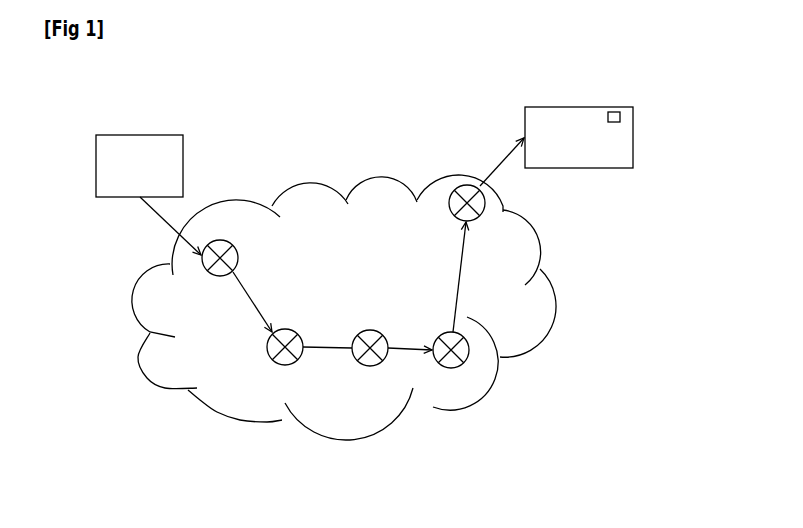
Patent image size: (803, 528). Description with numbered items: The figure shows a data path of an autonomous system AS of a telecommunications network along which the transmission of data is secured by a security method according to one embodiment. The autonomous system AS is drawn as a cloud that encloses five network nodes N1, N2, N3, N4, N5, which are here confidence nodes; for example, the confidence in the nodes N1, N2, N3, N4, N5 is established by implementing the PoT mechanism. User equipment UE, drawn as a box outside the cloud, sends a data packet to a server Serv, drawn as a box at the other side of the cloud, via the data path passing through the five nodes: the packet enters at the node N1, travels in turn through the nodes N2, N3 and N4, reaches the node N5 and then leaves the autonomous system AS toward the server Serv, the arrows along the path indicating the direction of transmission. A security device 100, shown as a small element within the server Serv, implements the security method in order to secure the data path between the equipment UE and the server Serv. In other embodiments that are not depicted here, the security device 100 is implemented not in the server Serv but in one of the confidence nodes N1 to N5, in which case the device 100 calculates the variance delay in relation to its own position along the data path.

The security device 100 is at (614, 108).
The user equipment UE is at (152, 173).
The server Serv is at (598, 149).
The autonomous system AS is at (150, 378).
The network node N1 is at (203, 263).
The network node N2 is at (282, 367).
The network node N3 is at (375, 368).
The network node N4 is at (453, 370).
The network node N5 is at (507, 210).